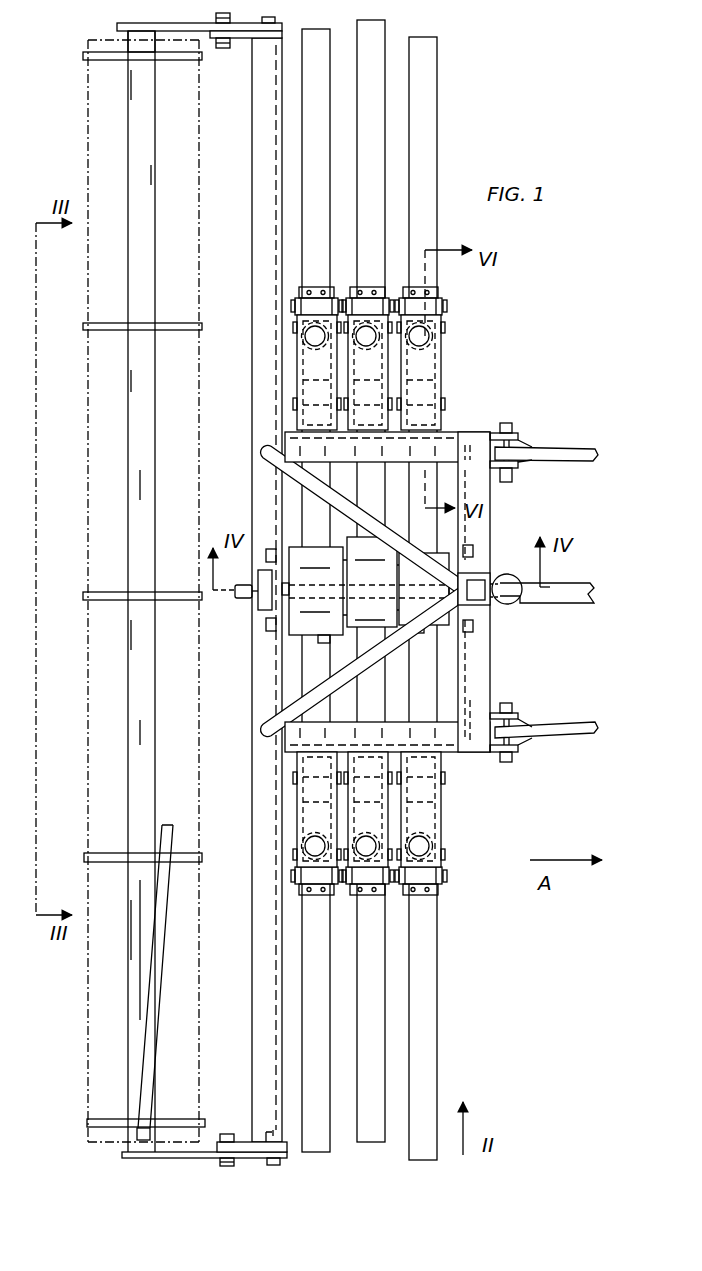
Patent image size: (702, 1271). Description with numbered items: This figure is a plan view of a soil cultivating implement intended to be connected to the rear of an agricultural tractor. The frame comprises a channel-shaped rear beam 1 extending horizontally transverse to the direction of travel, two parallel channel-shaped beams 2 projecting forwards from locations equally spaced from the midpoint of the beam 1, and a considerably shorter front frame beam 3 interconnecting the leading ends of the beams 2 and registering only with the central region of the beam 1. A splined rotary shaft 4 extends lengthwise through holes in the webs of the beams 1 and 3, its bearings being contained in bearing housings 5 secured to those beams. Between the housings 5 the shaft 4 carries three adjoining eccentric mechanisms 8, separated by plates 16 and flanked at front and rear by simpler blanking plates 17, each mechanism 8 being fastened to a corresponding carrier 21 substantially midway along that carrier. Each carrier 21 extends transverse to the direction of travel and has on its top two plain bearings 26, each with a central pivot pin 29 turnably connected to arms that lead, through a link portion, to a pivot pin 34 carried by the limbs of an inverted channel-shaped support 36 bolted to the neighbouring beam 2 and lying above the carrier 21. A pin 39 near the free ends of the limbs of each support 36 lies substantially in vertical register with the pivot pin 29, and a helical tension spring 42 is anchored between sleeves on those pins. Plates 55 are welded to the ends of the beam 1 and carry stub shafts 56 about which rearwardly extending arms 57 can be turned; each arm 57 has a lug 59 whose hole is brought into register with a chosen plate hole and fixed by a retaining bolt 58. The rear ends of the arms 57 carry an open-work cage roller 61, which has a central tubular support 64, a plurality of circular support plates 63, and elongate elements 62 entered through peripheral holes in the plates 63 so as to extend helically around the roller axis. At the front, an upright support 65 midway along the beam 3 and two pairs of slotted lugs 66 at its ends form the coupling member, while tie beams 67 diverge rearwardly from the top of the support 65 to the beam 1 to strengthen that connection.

The beam 1 is at (252, 253).
The beams 2 is at (286, 446).
The frame beam 3 is at (490, 672).
The rotary shaft 4 is at (244, 600).
The bearing housings 5 is at (262, 614).
The eccentric mechanisms 8 is at (330, 642).
The plates 16 is at (336, 545).
The blanking plates 17 is at (289, 630).
The carrier 21 is at (386, 45).
The bearings 26 is at (420, 292).
The pivot pin 29 is at (444, 302).
The pivot pin 34 is at (294, 404).
The support 36 is at (297, 366).
The pin 39 is at (448, 318).
The helical tension spring 42 is at (303, 342).
The plates 55 is at (243, 42).
The stub shafts 56 is at (272, 18).
The arms 57 is at (117, 27).
The retaining bolts 58 is at (216, 20).
The lug 59 is at (260, 30).
The roller 61 is at (86, 152).
The elongate elements 62 is at (156, 936).
The support plates 63 is at (203, 858).
The support 64 is at (130, 936).
The upright support 65 is at (498, 602).
The lugs 66 is at (522, 440).
The tie beams 67 is at (267, 456).